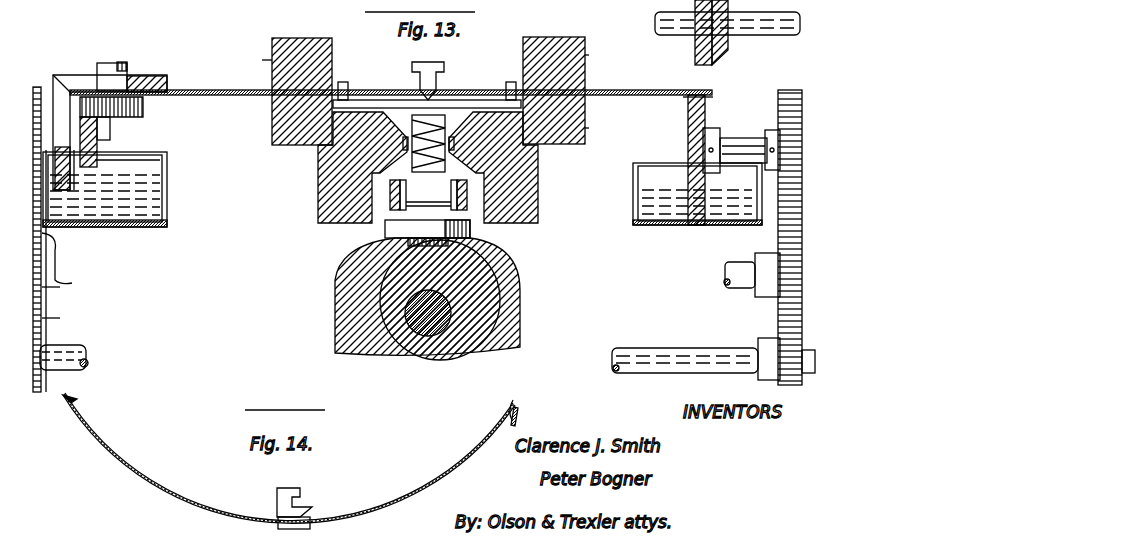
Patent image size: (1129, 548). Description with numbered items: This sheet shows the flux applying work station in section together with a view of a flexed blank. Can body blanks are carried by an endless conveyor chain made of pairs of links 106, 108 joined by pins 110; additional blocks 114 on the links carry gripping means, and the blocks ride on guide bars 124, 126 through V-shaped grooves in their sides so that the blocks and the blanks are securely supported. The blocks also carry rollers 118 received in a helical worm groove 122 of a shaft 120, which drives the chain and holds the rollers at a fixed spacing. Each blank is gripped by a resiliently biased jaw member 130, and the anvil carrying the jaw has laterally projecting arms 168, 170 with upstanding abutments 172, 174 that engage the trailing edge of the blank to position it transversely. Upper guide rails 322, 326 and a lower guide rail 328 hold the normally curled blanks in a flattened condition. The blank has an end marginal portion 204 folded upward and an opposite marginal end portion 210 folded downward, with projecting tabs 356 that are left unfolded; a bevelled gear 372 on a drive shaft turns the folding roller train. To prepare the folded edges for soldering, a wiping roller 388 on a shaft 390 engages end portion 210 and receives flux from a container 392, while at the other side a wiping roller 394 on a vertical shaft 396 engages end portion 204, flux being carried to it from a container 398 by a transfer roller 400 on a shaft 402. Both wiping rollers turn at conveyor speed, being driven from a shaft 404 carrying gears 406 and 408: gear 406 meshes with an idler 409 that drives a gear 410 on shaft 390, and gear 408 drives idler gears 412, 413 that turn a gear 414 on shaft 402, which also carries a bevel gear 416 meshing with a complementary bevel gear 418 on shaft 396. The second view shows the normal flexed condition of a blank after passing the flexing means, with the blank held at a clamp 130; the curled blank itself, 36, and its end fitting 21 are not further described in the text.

In FIG. 14, the cable end fitting 21 is at (520, 412).
In FIG. 14, the cable 36 is at (430, 470).
In FIG. 13, the links 106 is at (388, 208).
In FIG. 13, the links 108 is at (395, 236).
In FIG. 13, the pins 110 is at (425, 230).
In FIG. 13, the additional blocks 114 is at (442, 140).
In FIG. 13, the rollers 118 is at (360, 262).
In FIG. 13, the shaft 120 is at (522, 312).
In FIG. 13, the helical worm groove 122 is at (522, 290).
In FIG. 13, the guide bar 124 is at (330, 200).
In FIG. 13, the guide bar 126 is at (540, 205).
In FIG. 13, the jaw member 130 is at (399, 83).
In FIG. 14, the jaw member 130 is at (306, 490).
In FIG. 13, the laterally projecting arm 168 is at (356, 80).
In FIG. 13, the laterally projecting arm 170 is at (494, 82).
In FIG. 13, the upstanding abutment 172 is at (326, 38).
In FIG. 13, the upstanding abutment 174 is at (520, 60).
In FIG. 14, the end marginal portion 204 is at (72, 392).
In FIG. 13, the opposite marginal end portion 210 is at (700, 96).
In FIG. 13, the upper guide rail 322 is at (272, 47).
In FIG. 13, the upper guide rail 326 is at (586, 58).
In FIG. 13, the lower guide rail 328 is at (586, 128).
In FIG. 13, the projecting tabs 356 is at (706, 92).
In FIG. 14, the projecting tabs 356 is at (515, 400).
In FIG. 13, the bevelled gear 372 is at (694, 50).
In FIG. 13, the wiping roller 388 is at (695, 208).
In FIG. 13, the shaft 390 is at (742, 150).
In FIG. 13, the container 392 is at (745, 230).
In FIG. 13, the wiping roller 394 is at (72, 75).
In FIG. 13, the shaft 396 is at (125, 67).
In FIG. 13, the container 398 is at (128, 228).
In FIG. 13, the transfer roller 400 is at (74, 190).
In FIG. 13, the shaft 402 is at (38, 132).
In FIG. 13, the shaft 404 is at (72, 357).
In FIG. 13, the gear 406 is at (790, 325).
In FIG. 13, the gear 408 is at (78, 312).
In FIG. 13, the idler 409 is at (790, 232).
In FIG. 13, the gear 410 is at (790, 90).
In FIG. 13, the idler gear 412 is at (42, 287).
In FIG. 13, the idler gear 413 is at (102, 298).
In FIG. 13, the gear 414 is at (52, 85).
In FIG. 13, the bevel gear 416 is at (95, 162).
In FIG. 13, the bevel gear 418 is at (145, 113).